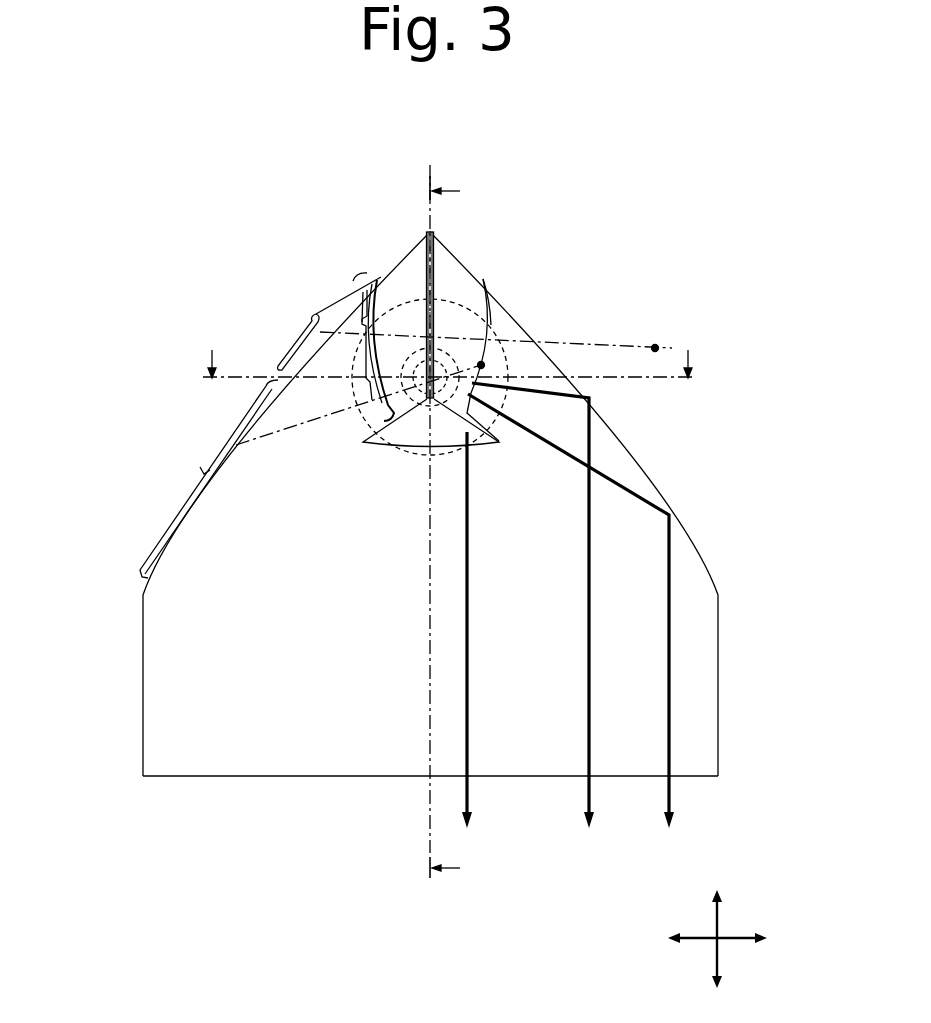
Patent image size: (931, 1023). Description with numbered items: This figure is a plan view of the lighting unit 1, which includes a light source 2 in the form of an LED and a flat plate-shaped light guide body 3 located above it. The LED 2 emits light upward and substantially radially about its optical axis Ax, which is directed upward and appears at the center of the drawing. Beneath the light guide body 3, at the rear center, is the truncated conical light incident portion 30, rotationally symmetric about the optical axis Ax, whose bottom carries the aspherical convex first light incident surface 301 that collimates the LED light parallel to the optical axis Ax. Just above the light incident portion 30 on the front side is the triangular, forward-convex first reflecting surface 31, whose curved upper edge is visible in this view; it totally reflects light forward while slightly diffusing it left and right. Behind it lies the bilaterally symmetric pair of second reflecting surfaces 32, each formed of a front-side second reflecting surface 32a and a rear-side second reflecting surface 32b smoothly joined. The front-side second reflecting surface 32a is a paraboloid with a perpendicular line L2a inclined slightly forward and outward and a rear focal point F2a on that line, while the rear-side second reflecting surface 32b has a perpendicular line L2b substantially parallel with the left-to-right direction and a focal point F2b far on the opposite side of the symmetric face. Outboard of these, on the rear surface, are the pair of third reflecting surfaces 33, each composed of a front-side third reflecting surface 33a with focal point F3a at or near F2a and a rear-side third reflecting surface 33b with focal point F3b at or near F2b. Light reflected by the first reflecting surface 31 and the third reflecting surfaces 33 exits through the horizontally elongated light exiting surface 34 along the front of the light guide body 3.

The lighting unit 1 is at (421, 141).
The light source 2 is at (436, 355).
The light guide body 3 is at (182, 640).
The light incident portion 30 is at (509, 403).
The first reflecting surface 31 is at (410, 432).
The second reflecting surfaces 32 is at (409, 314).
The front-side second reflecting surface 32a is at (385, 403).
The rear-side second reflecting surface 32b is at (390, 412).
The third reflecting surfaces 33 is at (397, 427).
The front-side third reflecting surface 33a is at (203, 471).
The rear-side third reflecting surface 33b is at (312, 317).
The light exiting surface 34 is at (275, 778).
The first light incident surface 301 is at (480, 327).
The optical axis Ax is at (428, 374).
The perpendicular line L2a is at (481, 365).
The perpendicular line L2b is at (613, 345).
The rear focal point F2a is at (525, 315).
The focal point F3a is at (431, 376).
The focal point F2b is at (701, 315).
The focal point F3b is at (655, 348).